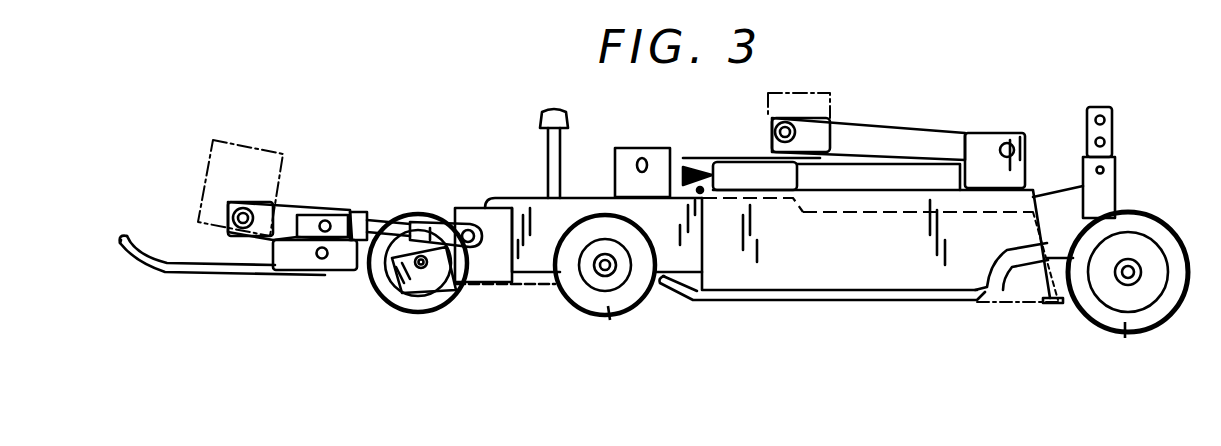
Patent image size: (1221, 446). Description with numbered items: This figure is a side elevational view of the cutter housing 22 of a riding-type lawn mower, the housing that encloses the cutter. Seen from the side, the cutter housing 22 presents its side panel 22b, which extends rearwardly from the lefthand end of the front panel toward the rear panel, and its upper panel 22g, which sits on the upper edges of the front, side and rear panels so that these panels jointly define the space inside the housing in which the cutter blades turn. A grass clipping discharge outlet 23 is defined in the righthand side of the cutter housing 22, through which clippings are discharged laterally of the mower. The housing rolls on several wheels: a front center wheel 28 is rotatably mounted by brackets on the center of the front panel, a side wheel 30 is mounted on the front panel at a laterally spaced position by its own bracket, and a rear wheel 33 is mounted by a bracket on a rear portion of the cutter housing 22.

The cutter housing 22 is at (947, 317).
The side panel 22b is at (898, 273).
The upper panel 22g is at (914, 210).
The grass clipping discharge outlet 23 is at (784, 273).
The front center wheel 28 is at (432, 313).
The left side wheel 30 is at (608, 311).
The rear wheel 33 is at (1126, 333).